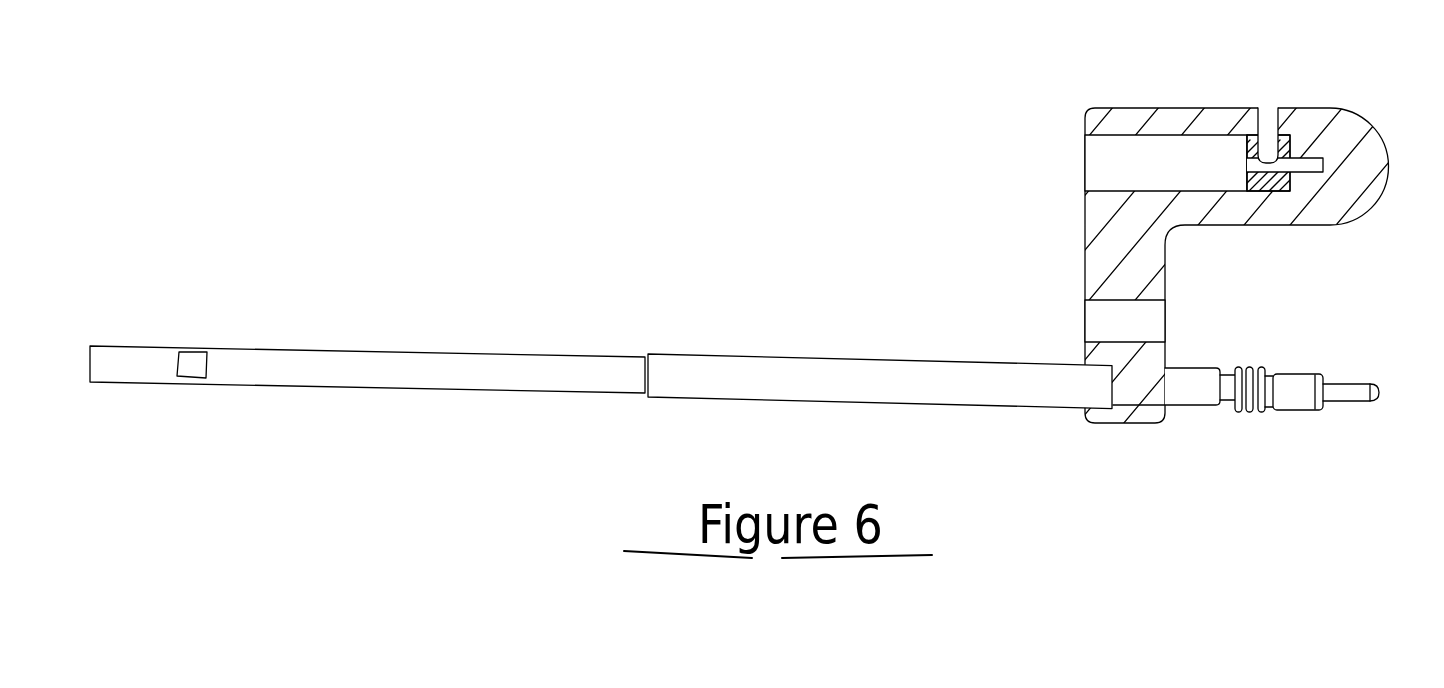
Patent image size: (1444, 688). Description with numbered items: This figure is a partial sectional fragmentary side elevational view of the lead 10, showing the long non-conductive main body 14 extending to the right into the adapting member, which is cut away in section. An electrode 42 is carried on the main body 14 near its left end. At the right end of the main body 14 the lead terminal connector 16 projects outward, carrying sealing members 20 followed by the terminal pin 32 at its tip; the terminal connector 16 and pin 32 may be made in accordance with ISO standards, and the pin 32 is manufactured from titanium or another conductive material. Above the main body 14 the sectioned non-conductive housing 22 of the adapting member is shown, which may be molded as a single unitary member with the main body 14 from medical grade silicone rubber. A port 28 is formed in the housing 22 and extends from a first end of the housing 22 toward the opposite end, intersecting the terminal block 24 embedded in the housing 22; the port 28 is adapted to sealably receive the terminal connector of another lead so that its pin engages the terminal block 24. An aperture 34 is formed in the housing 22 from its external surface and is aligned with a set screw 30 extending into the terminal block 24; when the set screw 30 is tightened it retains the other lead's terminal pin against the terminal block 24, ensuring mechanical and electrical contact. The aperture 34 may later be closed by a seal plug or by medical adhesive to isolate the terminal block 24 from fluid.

The lead 10 is at (574, 287).
The non-conductive main body 14 is at (695, 365).
The lead terminal connector 16 is at (1278, 372).
The sealing members 20 is at (1253, 412).
The non-conductive housing 22 is at (1142, 115).
The terminal block 24 is at (1283, 140).
The port 28 is at (1097, 161).
The set screw 30 is at (1270, 147).
The terminal pin 32 is at (1350, 382).
The aperture 34 is at (1270, 108).
The electrode 42 is at (195, 352).